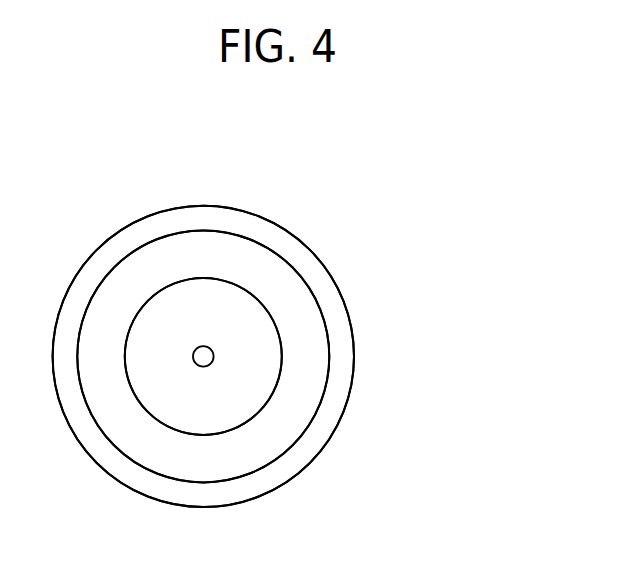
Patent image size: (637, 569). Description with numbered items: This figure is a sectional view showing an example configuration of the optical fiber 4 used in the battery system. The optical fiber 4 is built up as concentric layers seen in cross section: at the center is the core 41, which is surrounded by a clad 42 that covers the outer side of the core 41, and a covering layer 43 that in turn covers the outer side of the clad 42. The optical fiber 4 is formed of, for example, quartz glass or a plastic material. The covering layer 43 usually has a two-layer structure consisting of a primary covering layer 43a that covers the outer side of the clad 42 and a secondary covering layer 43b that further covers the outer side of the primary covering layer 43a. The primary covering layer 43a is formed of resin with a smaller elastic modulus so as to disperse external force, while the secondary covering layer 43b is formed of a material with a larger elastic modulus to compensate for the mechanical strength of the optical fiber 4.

The optical fiber 4 is at (333, 183).
The core 41 is at (203, 367).
The clad 42 is at (239, 405).
The covering layer 43 is at (280, 356).
The primary covering layer 43a is at (315, 378).
The secondary covering layer 43b is at (342, 336).